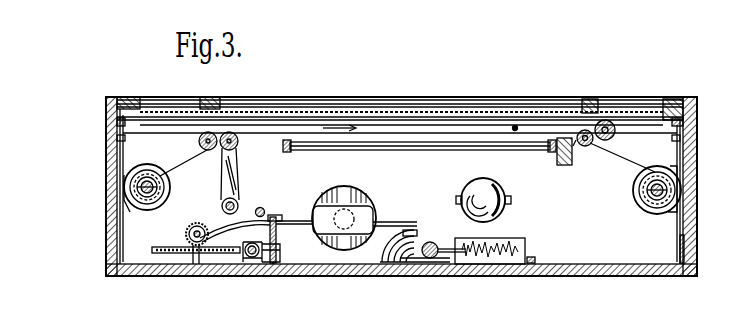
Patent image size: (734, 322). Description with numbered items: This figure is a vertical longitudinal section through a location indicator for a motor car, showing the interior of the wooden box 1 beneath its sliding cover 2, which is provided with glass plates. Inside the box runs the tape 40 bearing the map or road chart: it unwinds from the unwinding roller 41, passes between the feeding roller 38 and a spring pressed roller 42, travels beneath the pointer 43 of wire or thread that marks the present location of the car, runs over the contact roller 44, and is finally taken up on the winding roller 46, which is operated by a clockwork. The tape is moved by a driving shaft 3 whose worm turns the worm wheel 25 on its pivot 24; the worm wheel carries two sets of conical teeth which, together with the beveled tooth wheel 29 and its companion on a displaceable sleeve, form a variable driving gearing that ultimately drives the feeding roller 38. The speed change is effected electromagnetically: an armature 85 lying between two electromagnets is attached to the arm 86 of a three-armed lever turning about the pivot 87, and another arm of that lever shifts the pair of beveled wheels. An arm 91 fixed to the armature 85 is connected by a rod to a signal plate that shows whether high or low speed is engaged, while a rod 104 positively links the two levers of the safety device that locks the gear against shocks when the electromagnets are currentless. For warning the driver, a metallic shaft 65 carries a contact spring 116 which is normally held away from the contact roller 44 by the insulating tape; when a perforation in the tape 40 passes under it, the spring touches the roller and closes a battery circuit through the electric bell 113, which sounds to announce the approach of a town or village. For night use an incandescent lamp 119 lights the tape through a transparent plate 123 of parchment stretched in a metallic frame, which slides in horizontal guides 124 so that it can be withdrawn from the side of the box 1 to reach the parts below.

The wooden box 1 is at (697, 256).
The sliding cover 2 is at (258, 105).
The driving shaft 3 is at (281, 250).
The pivot 24 is at (196, 265).
The worm wheel 25 is at (152, 250).
The beveled tooth wheel 29 is at (186, 230).
The feeding roller 38 is at (199, 141).
The tape 40 is at (407, 133).
The unwinding roller 41 is at (170, 190).
The spring pressed roller 42 is at (238, 143).
The pointer 43 is at (515, 126).
The contact roller 44 is at (586, 148).
The winding roller 46 is at (640, 212).
The metallic shaft 65 is at (607, 120).
The armature 85 is at (368, 218).
The arm 86 is at (304, 216).
The pivot 87 is at (277, 264).
The arm 91 is at (410, 222).
The rod 104 is at (262, 207).
The electric bell 113 is at (430, 242).
The contact spring 116 is at (616, 128).
The incandescent lamp 119 is at (505, 205).
The transparent plate 123 is at (424, 152).
The horizontal guides 124 is at (287, 153).